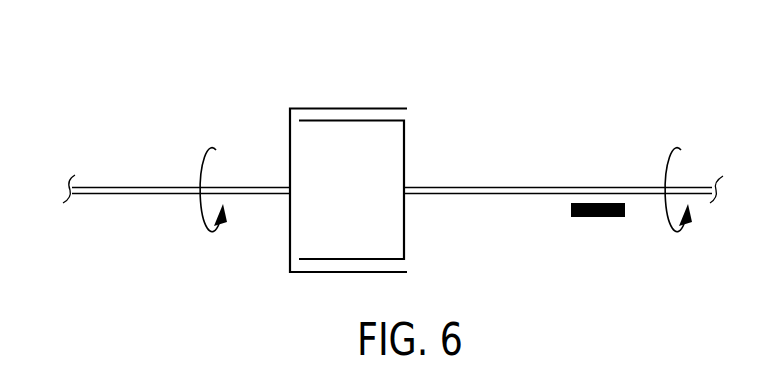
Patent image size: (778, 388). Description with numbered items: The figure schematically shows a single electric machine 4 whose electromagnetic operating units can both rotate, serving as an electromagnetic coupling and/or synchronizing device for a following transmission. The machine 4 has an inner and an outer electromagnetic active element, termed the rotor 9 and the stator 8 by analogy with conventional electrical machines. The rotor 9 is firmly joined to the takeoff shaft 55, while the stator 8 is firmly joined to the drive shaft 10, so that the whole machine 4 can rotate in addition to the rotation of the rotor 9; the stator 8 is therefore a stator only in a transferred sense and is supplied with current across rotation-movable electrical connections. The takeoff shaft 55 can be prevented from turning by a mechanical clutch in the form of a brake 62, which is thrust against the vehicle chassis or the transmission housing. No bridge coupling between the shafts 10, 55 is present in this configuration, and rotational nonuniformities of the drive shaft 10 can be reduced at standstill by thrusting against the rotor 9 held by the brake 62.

The electric machine 4 is at (438, 99).
The stator 8 is at (348, 108).
The rotor 9 is at (373, 258).
The drive shaft 10 is at (120, 193).
The takeoff shaft 55 is at (502, 187).
The brake 62 is at (607, 217).